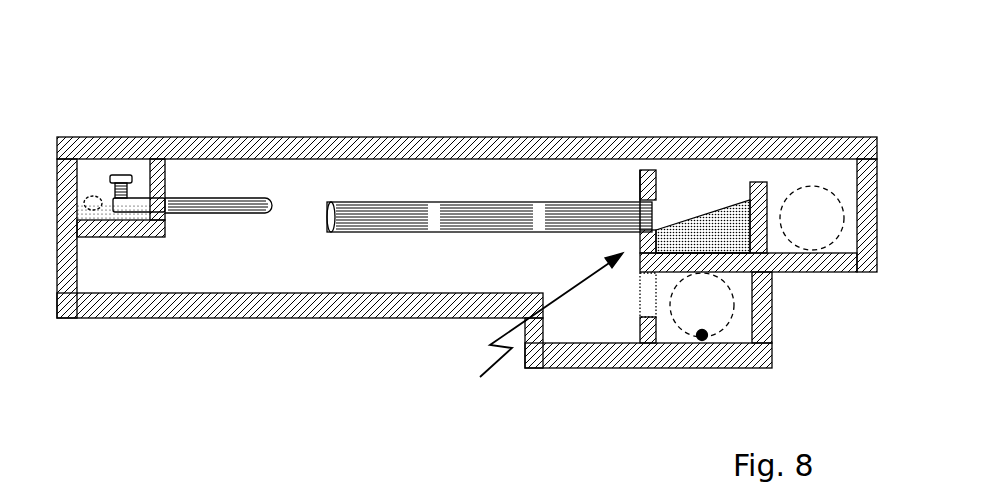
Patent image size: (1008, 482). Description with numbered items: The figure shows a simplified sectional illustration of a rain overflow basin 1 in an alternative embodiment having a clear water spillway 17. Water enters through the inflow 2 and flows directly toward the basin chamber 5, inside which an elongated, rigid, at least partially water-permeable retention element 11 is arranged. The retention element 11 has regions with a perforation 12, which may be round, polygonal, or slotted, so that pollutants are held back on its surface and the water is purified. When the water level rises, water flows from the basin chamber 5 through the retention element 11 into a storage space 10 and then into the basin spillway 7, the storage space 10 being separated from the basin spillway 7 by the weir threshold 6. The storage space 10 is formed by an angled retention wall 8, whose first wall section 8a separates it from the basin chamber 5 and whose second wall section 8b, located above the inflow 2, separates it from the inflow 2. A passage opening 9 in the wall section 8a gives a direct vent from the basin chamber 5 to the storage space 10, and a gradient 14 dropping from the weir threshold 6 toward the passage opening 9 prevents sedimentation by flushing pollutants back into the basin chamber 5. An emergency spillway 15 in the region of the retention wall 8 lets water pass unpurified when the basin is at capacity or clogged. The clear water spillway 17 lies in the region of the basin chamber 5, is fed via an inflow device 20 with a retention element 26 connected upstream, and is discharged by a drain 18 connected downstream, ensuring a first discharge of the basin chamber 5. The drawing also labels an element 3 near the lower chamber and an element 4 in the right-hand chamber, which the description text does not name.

The rain overflow basin 1 is at (453, 36).
The inflow 2 is at (749, 330).
The outlet / opening 3 is at (686, 389).
The cylindrical element in right chamber 4 is at (825, 274).
The basin chamber 5 is at (467, 274).
The weir threshold 6 is at (776, 155).
The basin spillway 7 is at (815, 155).
The retention wall 8 is at (539, 326).
The first wall section 8a is at (640, 192).
The second wall section 8b is at (703, 156).
The passage opening 9 is at (650, 217).
The storage space 10 is at (703, 155).
The retention element 11 is at (489, 144).
The perforation 12 is at (361, 144).
The gradient 14 is at (716, 155).
The emergency spillway 15 is at (633, 155).
The clear water spillway 17 is at (145, 127).
The drain 18 is at (113, 138).
The inflow device 20 is at (139, 305).
The retention element 26 is at (410, 258).